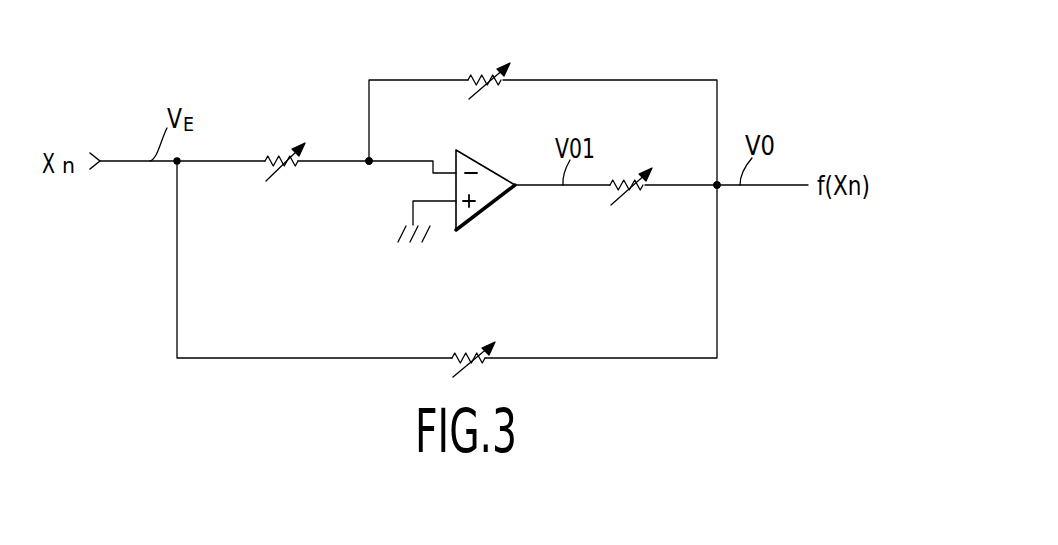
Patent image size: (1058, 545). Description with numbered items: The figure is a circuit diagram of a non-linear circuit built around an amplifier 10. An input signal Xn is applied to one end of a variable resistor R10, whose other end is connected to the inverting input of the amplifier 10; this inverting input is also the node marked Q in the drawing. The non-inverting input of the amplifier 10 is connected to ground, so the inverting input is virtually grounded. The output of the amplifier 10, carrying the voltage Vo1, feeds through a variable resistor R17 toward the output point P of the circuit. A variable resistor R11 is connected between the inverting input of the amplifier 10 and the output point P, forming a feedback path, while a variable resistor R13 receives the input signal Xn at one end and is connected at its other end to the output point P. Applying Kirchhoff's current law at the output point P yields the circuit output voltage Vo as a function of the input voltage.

The amplifier 10 is at (493, 203).
The variable resistor R10 is at (282, 145).
The variable resistor R11 is at (484, 68).
The variable resistor R13 is at (474, 343).
The variable output resistor R17 is at (630, 169).
The summing node Q is at (368, 164).
The output point P is at (718, 188).